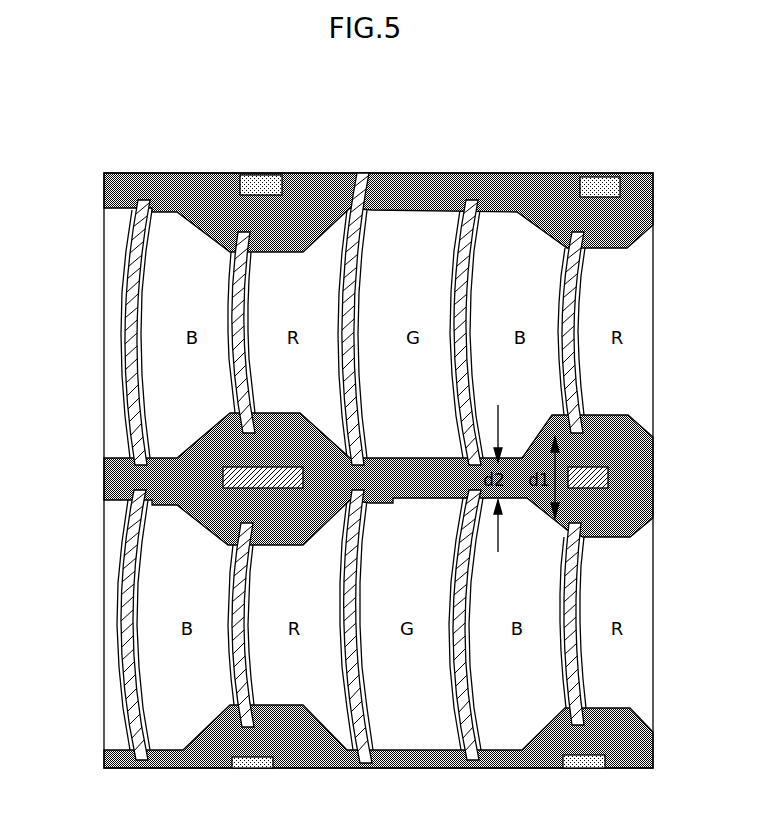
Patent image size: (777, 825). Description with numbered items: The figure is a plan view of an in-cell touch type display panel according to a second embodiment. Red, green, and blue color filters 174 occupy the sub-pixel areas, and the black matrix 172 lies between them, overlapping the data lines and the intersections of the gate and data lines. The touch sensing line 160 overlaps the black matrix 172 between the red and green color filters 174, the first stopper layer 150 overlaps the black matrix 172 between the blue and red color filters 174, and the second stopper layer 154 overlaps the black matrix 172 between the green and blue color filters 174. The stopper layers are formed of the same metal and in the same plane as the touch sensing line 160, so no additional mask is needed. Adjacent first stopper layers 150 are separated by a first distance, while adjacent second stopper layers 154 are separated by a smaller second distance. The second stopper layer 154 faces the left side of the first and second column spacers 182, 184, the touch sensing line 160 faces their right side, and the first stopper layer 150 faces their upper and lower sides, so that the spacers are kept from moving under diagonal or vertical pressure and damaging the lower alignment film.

The first stopper layer 150 is at (243, 231).
The second stopper layer 154 is at (143, 207).
The touch sensing line 160 is at (365, 176).
The black matrix 172 is at (469, 199).
The color filters 174 is at (421, 209).
The first column spacer 182 is at (228, 483).
The second column spacer 184 is at (600, 178).